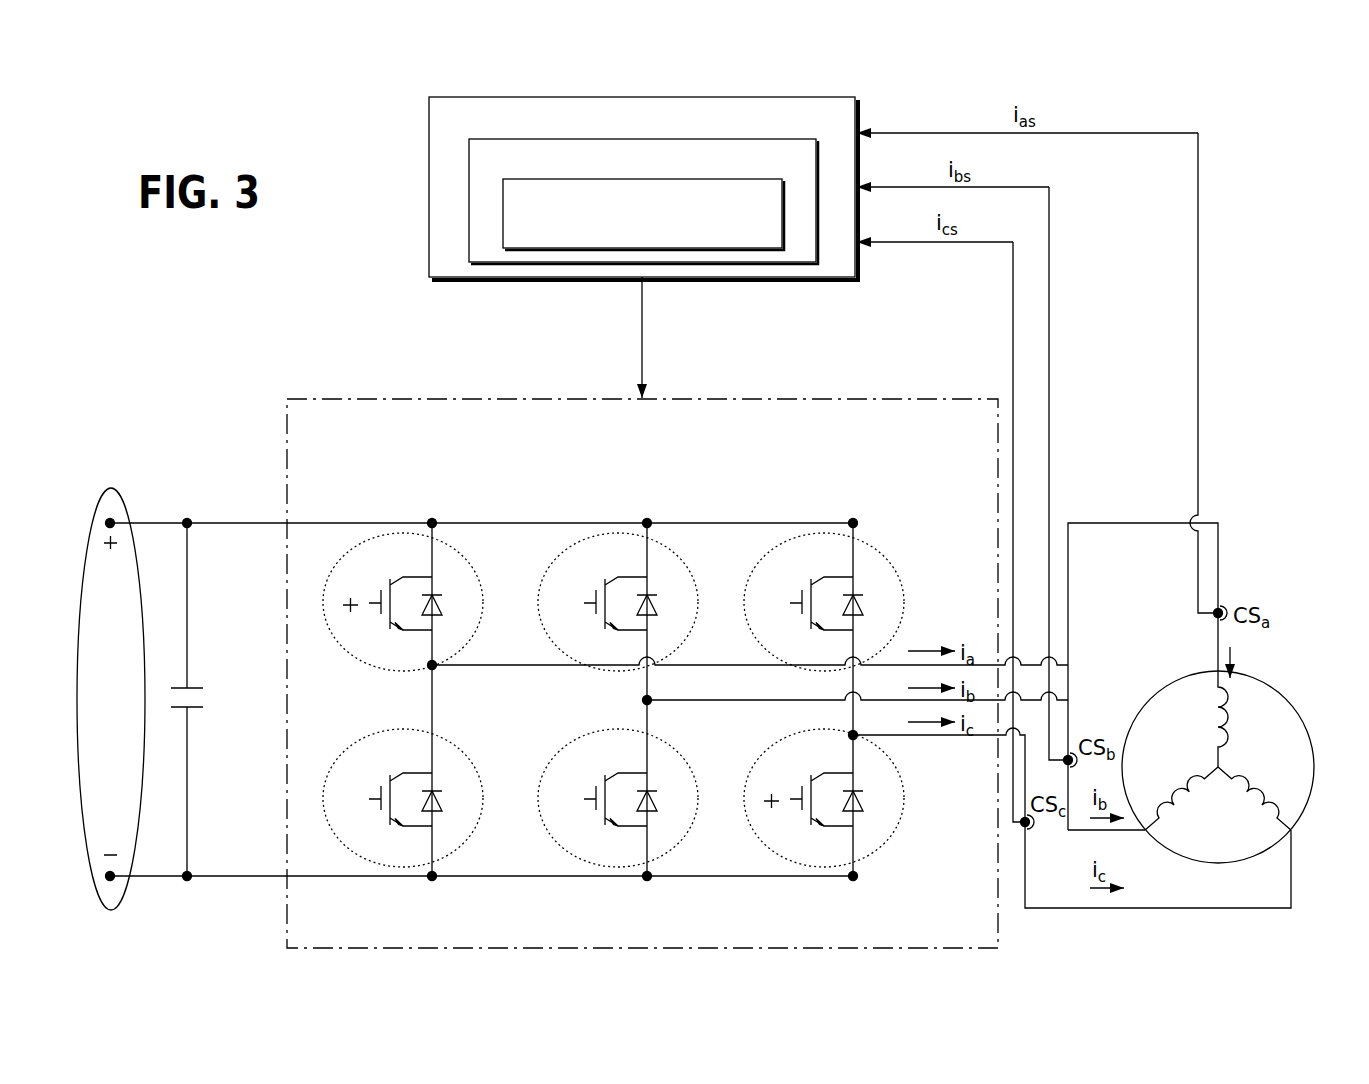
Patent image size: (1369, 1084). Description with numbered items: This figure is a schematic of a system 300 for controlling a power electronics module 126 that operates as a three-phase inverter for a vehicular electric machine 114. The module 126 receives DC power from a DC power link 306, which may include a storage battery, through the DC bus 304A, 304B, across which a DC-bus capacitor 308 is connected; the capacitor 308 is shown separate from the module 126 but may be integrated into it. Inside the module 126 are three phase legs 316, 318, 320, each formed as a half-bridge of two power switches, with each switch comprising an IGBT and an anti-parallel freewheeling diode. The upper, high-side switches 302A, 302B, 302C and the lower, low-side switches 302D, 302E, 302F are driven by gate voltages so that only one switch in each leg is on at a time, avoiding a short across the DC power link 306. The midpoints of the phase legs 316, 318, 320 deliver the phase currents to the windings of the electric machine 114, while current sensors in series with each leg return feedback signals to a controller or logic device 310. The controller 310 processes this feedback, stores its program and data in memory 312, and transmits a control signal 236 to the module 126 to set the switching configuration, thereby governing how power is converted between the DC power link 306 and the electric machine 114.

The system 300 is at (957, 87).
The controller 310 is at (641, 96).
The memory 312 is at (806, 139).
The power electronics module 126 is at (486, 398).
The control signal 236 is at (640, 333).
The DC power link 306 is at (114, 491).
The DC bus 304A is at (250, 521).
The DC bus 304B is at (250, 878).
The DC-bus capacitor 308 is at (194, 716).
The high-side switch 302A is at (390, 535).
The high-side switch 302B is at (605, 535).
The high-side switch 302C is at (811, 535).
The low-side switch 302D is at (399, 868).
The low-side switch 302E is at (614, 868).
The low-side switch 302F is at (820, 868).
The first phase leg 316 is at (431, 668).
The second phase leg 318 is at (645, 699).
The third phase leg 320 is at (852, 734).
The electric machine 114 is at (1288, 694).